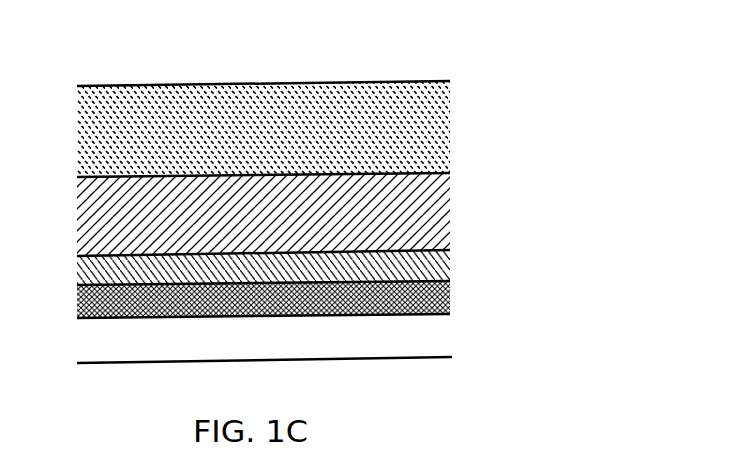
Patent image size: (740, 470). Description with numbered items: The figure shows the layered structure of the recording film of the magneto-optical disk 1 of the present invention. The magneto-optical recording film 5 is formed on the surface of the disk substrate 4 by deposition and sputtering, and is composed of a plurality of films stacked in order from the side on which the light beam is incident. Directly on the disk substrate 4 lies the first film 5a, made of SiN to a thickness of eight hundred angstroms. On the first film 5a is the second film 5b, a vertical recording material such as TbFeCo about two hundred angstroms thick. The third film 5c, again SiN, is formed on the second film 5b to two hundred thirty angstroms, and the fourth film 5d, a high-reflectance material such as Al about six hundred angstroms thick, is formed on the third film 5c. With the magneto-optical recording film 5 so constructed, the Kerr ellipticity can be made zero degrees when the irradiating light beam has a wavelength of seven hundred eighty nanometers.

The magneto-optical disk 1 is at (290, 42).
The disk substrate 4 is at (445, 101).
The magneto-optical recording film 5 is at (333, 267).
The first film 5a is at (452, 212).
The second film 5b is at (452, 264).
The third film 5c is at (452, 298).
The fourth film 5d is at (302, 338).